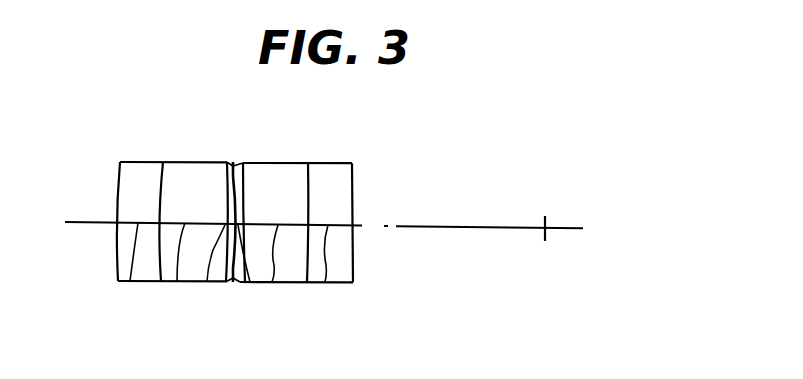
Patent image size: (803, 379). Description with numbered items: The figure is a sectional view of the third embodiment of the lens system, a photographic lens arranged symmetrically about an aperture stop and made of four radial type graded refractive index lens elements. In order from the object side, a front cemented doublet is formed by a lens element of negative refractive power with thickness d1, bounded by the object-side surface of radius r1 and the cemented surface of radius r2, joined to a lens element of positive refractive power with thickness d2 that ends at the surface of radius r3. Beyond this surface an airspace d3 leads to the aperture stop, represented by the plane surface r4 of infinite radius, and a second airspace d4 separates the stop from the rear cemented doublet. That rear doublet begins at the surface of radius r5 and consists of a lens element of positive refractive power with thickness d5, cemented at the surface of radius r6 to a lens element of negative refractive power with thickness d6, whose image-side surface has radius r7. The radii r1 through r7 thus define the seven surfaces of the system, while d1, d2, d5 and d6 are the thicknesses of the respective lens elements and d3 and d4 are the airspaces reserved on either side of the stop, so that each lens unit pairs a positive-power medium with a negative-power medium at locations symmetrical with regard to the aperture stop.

The radius of curvature of first lens surface r1 is at (117, 178).
The radius of curvature of second lens surface r2 is at (160, 182).
The radius of curvature of third lens surface r3 is at (223, 197).
The aperture stop surface r4 is at (232, 163).
The radius of curvature of fifth lens surface r5 is at (245, 180).
The radius of curvature of sixth lens surface r6 is at (307, 182).
The radius of curvature of seventh lens surface r7 is at (352, 183).
The thickness of first lens element d1 is at (130, 282).
The thickness of second lens element d2 is at (177, 282).
The airspace between front doublet and aperture stop d3 is at (207, 282).
The airspace between aperture stop and rear doublet d4 is at (250, 283).
The thickness of third lens element d5 is at (272, 282).
The thickness of fourth lens element d6 is at (325, 282).